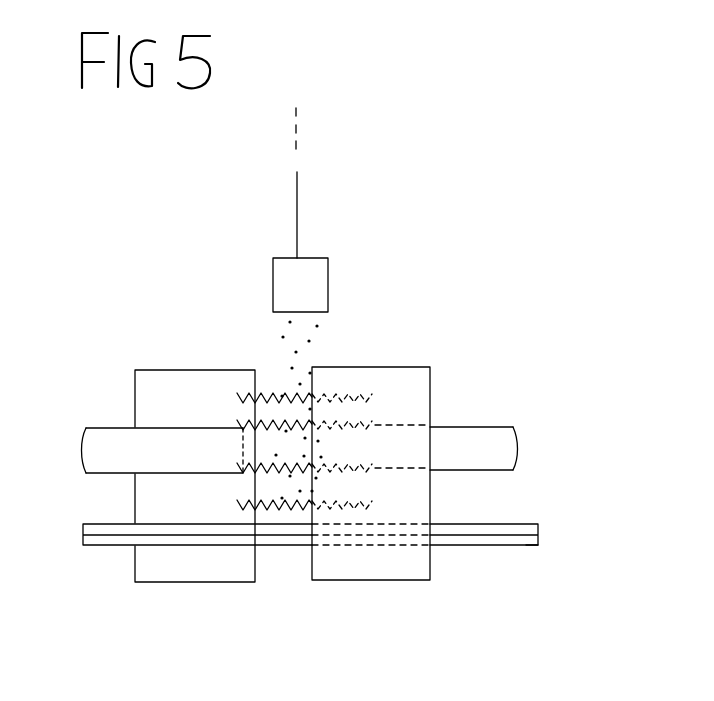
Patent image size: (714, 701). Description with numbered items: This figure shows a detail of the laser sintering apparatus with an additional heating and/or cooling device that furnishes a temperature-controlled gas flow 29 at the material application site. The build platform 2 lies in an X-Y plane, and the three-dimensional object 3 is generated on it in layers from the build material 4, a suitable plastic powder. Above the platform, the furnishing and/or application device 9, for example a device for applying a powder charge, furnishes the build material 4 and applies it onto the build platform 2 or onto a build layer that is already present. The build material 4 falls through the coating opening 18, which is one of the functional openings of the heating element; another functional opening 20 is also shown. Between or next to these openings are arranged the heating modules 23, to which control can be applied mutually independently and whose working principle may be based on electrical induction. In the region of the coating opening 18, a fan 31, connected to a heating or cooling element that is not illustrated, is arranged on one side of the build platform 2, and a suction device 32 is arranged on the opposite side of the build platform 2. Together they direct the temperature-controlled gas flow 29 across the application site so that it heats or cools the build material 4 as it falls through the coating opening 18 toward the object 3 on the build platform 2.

The build platform 2 is at (528, 541).
The three-dimensional object 3 is at (536, 524).
The build material 4 is at (320, 344).
The furnishing and/or application device 9 is at (307, 303).
The coating opening 18 is at (264, 447).
The functional opening 20 is at (264, 447).
The heating module 23 is at (493, 443).
The temperature-controlled gas flow 29 is at (273, 511).
The fan 31 is at (410, 386).
The suction device 32 is at (152, 570).